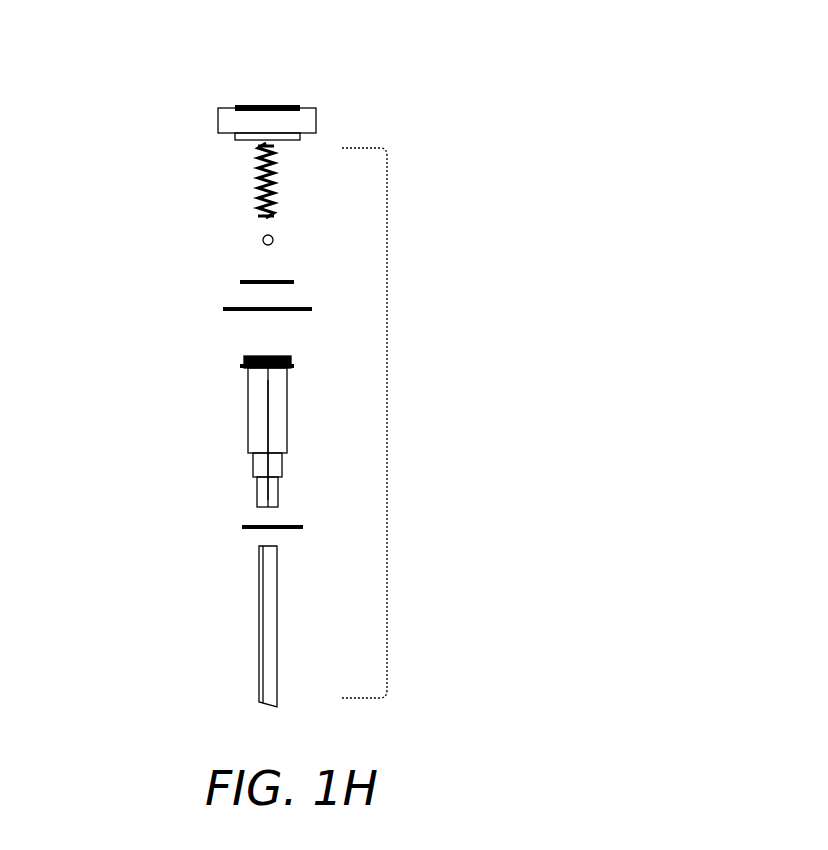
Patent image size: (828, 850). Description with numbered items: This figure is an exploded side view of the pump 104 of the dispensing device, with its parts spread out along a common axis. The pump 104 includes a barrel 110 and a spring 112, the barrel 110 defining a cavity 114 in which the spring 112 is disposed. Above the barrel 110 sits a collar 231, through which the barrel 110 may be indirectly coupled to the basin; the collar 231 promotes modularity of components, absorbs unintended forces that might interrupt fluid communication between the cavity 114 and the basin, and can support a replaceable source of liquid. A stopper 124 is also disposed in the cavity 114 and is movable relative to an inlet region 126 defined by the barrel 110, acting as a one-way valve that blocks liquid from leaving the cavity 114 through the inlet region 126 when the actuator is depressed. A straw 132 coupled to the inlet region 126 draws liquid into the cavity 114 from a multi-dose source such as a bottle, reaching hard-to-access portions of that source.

The collar 231 is at (316, 108).
The spring 112 is at (263, 175).
The stopper 124 is at (262, 238).
The barrel 110 is at (250, 403).
The cavity 114 is at (248, 432).
The inlet region 126 is at (263, 507).
The straw 132 is at (260, 627).
The pump 104 is at (387, 417).